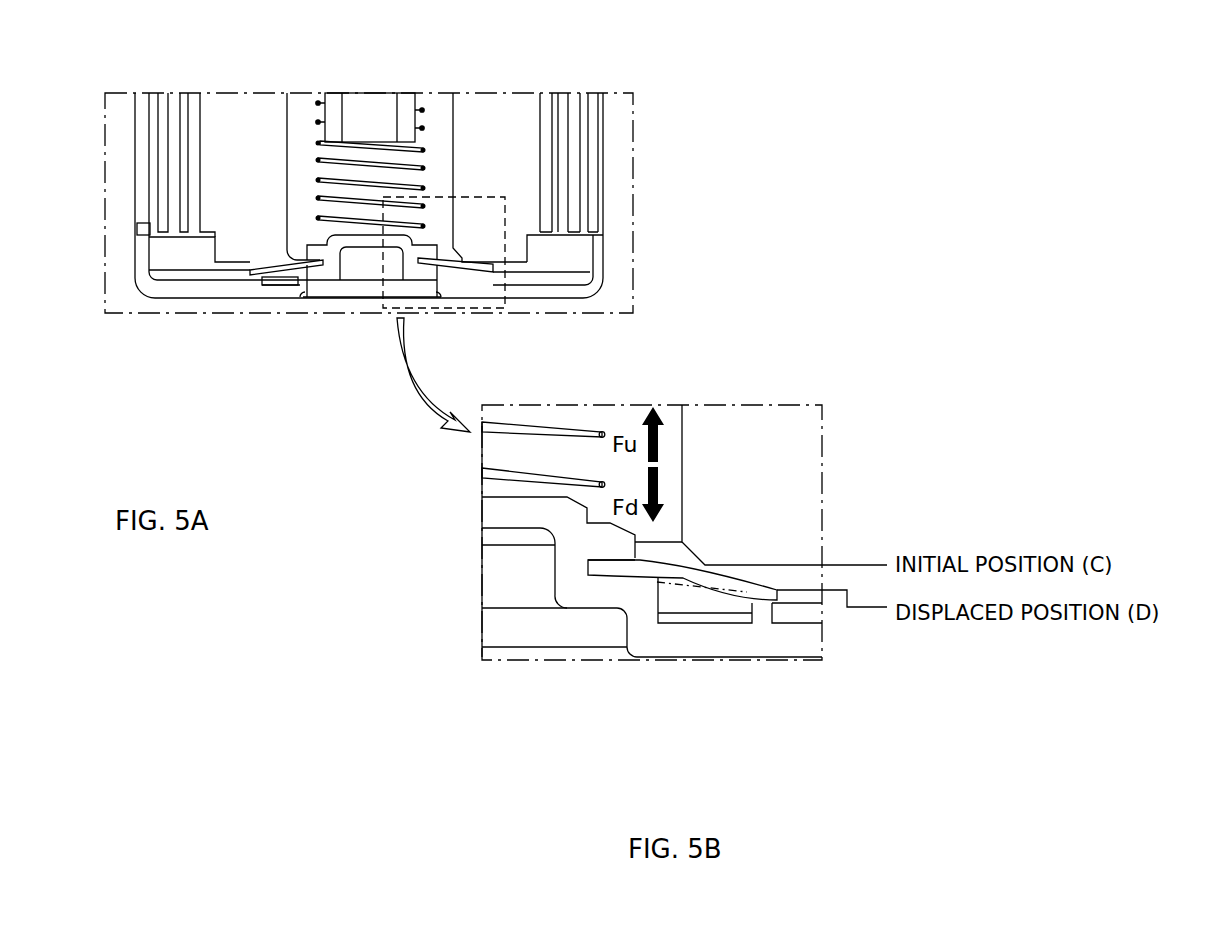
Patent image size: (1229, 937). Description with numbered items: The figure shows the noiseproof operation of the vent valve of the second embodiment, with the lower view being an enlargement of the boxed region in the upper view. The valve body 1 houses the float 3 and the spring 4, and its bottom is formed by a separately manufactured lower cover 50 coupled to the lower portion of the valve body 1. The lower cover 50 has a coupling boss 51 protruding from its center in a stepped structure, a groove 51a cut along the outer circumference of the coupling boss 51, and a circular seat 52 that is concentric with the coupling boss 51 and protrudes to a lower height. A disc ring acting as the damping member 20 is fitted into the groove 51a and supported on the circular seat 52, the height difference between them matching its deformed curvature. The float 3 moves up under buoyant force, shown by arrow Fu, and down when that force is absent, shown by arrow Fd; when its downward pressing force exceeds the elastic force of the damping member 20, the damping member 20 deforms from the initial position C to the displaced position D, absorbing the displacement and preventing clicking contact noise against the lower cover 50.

In FIG. 5A, the valve body 1 is at (603, 150).
In FIG. 5A, the float 3 is at (487, 128).
In FIG. 5B, the float 3 is at (760, 437).
In FIG. 5A, the spring 4 is at (417, 168).
In FIG. 5B, the spring 4 is at (603, 432).
In FIG. 5A, the damping member 20 is at (477, 262).
In FIG. 5B, the damping member 20 is at (723, 575).
In FIG. 5A, the lower cover 50 is at (319, 353).
In FIG. 5B, the lower cover 50 is at (586, 597).
In FIG. 5A, the coupling boss 51 is at (373, 242).
In FIG. 5B, the coupling boss 51 is at (535, 515).
In FIG. 5A, the groove 51a is at (313, 267).
In FIG. 5B, the groove 51a is at (610, 572).
In FIG. 5A, the circular seat 52 is at (257, 282).
In FIG. 5B, the circular seat 52 is at (765, 617).